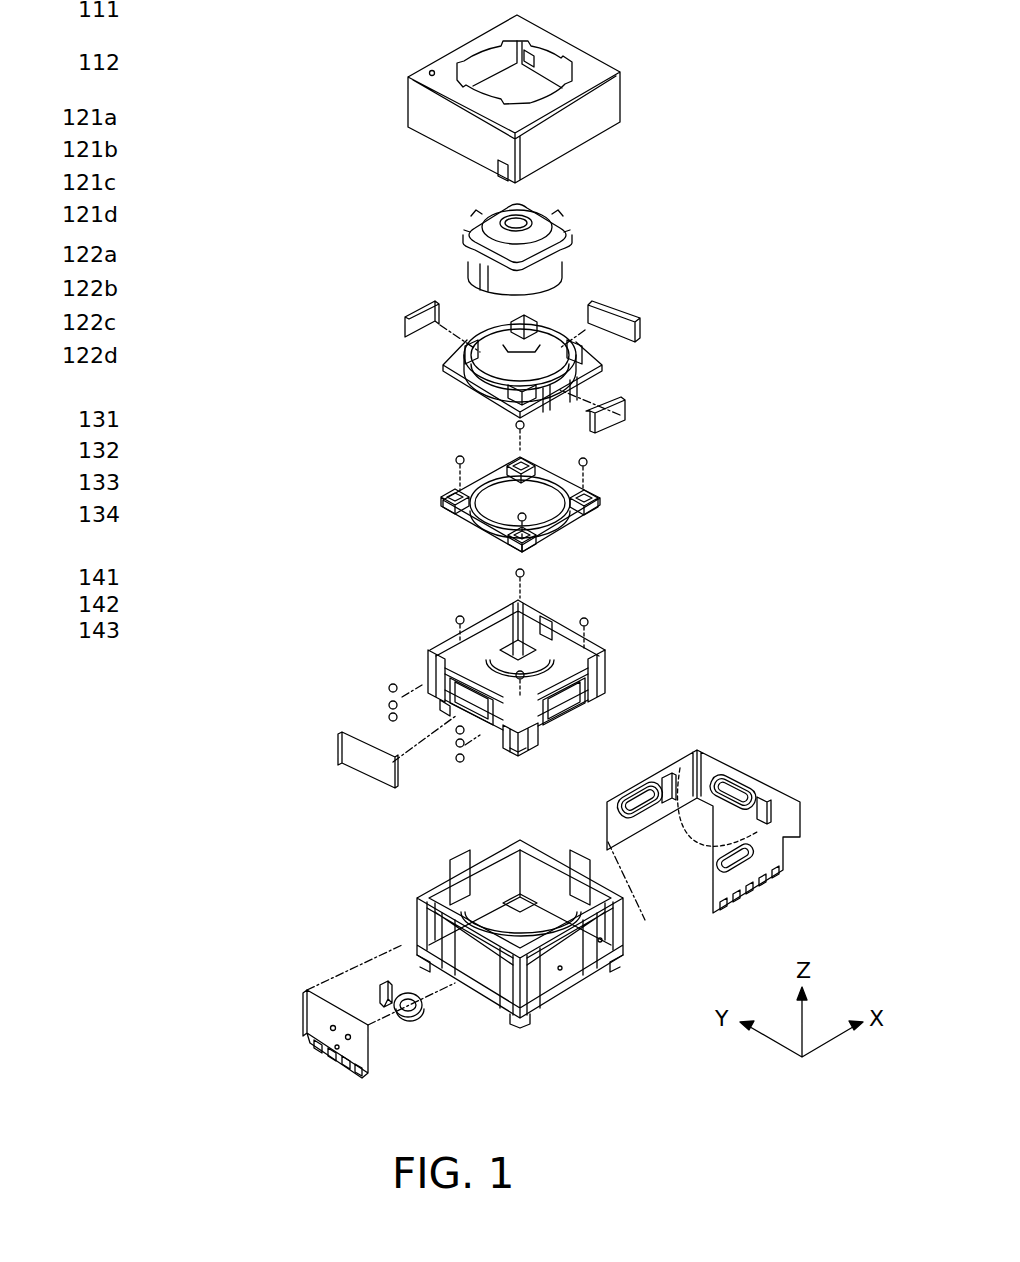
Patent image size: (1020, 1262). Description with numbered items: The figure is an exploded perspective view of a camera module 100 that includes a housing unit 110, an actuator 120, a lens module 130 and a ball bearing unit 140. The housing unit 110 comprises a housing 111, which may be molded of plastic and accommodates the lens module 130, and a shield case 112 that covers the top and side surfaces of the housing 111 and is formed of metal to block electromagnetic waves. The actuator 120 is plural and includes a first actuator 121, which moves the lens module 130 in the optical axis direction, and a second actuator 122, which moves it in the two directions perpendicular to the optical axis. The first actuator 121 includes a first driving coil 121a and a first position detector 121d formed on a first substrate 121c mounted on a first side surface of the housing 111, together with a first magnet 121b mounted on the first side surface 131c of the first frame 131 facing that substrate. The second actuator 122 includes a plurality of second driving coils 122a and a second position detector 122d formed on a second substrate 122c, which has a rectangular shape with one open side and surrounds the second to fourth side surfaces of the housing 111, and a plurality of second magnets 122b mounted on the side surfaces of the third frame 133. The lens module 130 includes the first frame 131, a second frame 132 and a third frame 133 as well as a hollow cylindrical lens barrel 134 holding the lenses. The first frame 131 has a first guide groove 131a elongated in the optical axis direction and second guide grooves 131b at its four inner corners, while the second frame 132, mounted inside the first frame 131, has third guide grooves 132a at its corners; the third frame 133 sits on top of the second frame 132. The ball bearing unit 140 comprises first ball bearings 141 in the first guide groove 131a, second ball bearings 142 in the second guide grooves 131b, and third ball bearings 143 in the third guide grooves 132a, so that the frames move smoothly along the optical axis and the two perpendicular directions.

The camera module 100 is at (820, 186).
The housing unit 110 is at (122, 3).
The housing 111 is at (547, 983).
The shield case 112 is at (430, 105).
The actuator 120 is at (192, 150).
The first actuator 121 is at (122, 108).
The first driving coil 121a is at (412, 1018).
The first magnet 121b is at (362, 773).
The first substrate 121c is at (310, 1010).
The first position detector 121d is at (382, 990).
The second actuator 122 is at (122, 246).
The second driving coil 122a is at (657, 778).
The second magnet 122b is at (625, 410).
The second substrate 122c is at (618, 830).
The second position detector 122d is at (760, 795).
The lens module 130 is at (122, 408).
The first frame 131 is at (607, 672).
The first guide groove 131a is at (520, 756).
The second guide groove 131b is at (545, 615).
The first side surface of the first frame 131c is at (440, 706).
The second frame 132 is at (603, 507).
The third guide groove 132a is at (598, 492).
The third frame 133 is at (470, 375).
The lens barrel 134 is at (470, 270).
The ball bearing unit 140 is at (122, 567).
The first ball bearing 141 is at (389, 688).
The second ball bearing 142 is at (456, 617).
The third ball bearing 143 is at (455, 457).